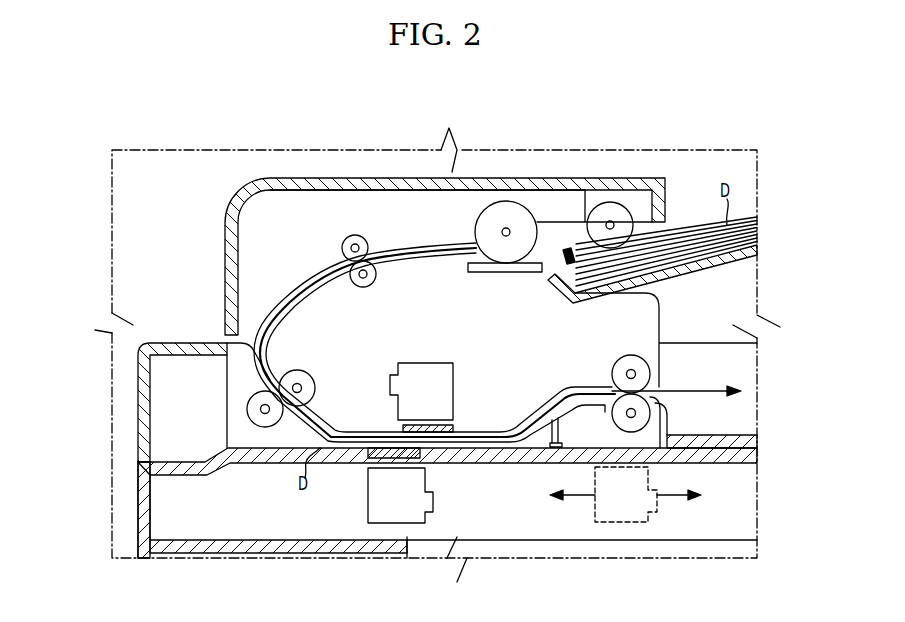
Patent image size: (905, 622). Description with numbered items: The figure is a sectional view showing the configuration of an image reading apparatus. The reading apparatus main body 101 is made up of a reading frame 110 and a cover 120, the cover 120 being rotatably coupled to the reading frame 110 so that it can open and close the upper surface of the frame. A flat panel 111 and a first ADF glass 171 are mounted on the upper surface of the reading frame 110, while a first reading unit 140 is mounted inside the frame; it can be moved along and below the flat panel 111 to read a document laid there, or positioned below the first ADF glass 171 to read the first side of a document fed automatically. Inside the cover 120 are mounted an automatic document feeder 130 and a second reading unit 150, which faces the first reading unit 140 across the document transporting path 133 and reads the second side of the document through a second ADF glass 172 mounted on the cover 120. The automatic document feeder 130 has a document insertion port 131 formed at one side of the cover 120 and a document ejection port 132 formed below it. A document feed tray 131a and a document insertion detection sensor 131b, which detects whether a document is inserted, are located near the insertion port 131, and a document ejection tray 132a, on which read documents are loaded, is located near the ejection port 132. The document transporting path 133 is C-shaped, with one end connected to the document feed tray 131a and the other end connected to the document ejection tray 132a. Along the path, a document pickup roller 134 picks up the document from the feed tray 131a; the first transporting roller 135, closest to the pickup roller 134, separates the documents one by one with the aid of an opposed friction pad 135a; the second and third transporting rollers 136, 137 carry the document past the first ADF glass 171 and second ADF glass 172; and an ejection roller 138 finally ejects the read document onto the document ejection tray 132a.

The reading apparatus main body 101 is at (62, 413).
The reading frame 110 is at (145, 505).
The flat panel 111 is at (727, 450).
The cover 120 is at (138, 412).
The automatic document feeder 130 is at (521, 197).
The document insertion port 131 is at (650, 233).
The document feed tray 131a is at (715, 263).
The document insertion detection sensor 131b is at (565, 250).
The document ejection port 132 is at (655, 400).
The document ejection tray 132a is at (740, 437).
The document transporting path 133 is at (292, 293).
The document pickup roller 134 is at (613, 207).
The first transporting roller 135 is at (492, 210).
The friction pad 135a is at (519, 274).
The second transporting roller 136 is at (348, 243).
The third transporting roller 137 is at (265, 420).
The ejection roller 138 is at (632, 358).
The first reading unit 140 is at (425, 483).
The second reading unit 150 is at (453, 368).
The first ADF glass 171 is at (385, 458).
The second ADF glass 172 is at (453, 427).